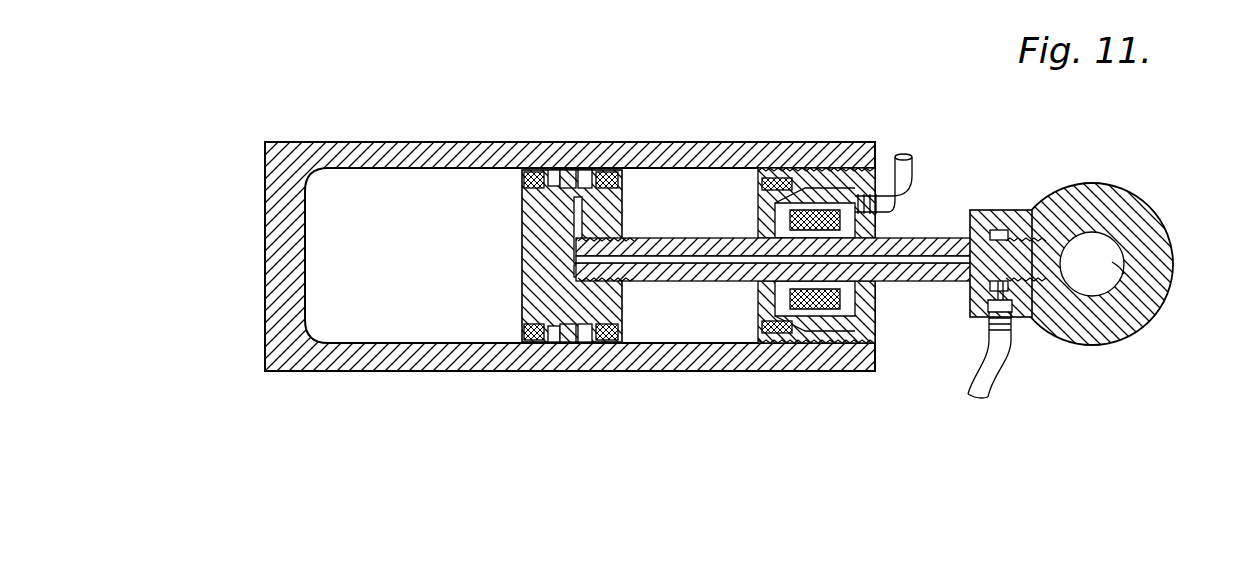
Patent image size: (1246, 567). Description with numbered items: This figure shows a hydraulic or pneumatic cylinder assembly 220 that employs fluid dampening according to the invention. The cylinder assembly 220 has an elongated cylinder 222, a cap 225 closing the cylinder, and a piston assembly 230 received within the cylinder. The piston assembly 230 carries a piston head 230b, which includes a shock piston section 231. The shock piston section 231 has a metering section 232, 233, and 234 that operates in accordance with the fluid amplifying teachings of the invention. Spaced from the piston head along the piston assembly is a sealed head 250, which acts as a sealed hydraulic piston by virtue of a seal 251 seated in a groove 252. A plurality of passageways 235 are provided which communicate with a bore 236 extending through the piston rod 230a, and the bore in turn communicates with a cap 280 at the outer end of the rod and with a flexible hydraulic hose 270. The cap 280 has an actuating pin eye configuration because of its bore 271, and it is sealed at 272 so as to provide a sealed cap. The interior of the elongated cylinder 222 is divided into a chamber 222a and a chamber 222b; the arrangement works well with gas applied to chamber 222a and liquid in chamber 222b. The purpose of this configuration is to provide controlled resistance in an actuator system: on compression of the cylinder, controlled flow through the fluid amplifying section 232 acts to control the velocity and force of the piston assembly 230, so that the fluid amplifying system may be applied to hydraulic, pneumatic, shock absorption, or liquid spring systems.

The cylinder assembly 220 is at (484, 125).
The elongated cylinder 222 is at (372, 373).
The chamber 222a is at (720, 345).
The chamber 222b is at (325, 233).
The cap 225 is at (860, 325).
The piston assembly 230 is at (940, 216).
The piston rod 230a is at (735, 237).
The piston head 230b is at (522, 272).
The shock piston section 231 is at (524, 306).
The metering section 232 is at (530, 170).
The metering section 233 is at (562, 172).
The metering section 234 is at (523, 198).
The passageways 235 is at (576, 228).
The bore 236 is at (692, 263).
The sealed head 250 is at (612, 220).
The seal 251 is at (604, 174).
The groove 252 is at (603, 345).
The flexible hydraulic hose 270 is at (992, 390).
The bore 271 is at (1112, 262).
The seal 272 is at (985, 210).
The cap 280 is at (1140, 205).